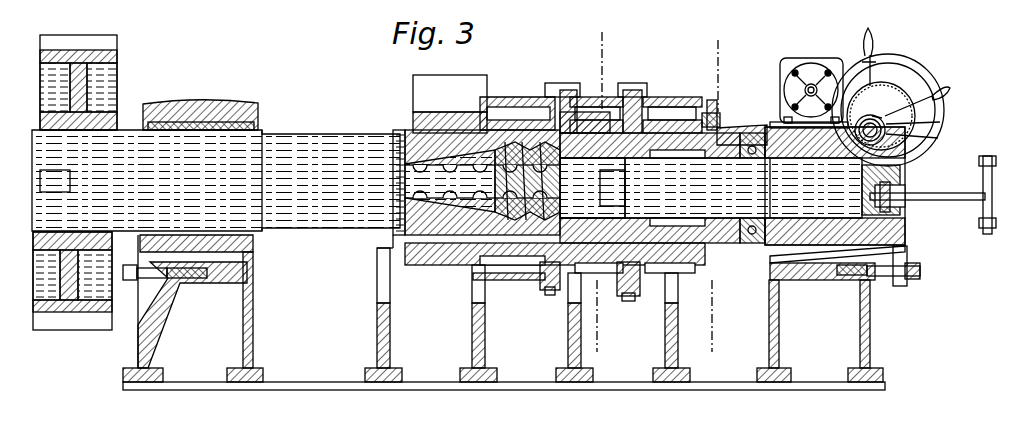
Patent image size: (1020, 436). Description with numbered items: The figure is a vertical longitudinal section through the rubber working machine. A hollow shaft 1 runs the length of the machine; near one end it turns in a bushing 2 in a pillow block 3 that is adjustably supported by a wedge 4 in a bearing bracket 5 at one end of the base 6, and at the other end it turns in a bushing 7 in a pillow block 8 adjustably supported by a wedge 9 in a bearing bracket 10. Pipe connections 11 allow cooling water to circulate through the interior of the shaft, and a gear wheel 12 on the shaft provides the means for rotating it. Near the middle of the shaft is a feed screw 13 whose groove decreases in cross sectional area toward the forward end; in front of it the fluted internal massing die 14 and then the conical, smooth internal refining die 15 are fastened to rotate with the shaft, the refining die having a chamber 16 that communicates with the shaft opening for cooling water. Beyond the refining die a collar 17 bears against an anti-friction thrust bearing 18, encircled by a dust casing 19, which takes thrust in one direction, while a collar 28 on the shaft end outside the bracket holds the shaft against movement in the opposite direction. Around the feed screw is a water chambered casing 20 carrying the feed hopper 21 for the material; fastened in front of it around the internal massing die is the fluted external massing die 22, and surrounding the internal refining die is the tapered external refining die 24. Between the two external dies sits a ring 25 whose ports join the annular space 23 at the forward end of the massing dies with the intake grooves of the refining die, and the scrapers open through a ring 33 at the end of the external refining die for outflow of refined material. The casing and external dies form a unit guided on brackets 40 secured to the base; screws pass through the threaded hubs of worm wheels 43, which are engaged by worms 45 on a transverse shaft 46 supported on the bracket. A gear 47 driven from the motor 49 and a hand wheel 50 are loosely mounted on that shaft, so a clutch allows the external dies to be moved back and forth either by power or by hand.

The shaft 1 is at (348, 131).
The bushing 2 is at (247, 116).
The pillow block 3 is at (254, 247).
The wedge 4 is at (255, 276).
The bearing bracket 5 is at (254, 335).
The base 6 is at (334, 372).
The bushing 7 is at (905, 246).
The pillow block 8 is at (920, 270).
The wedge 9 is at (880, 285).
The bearing bracket 10 is at (752, 68).
The pipe connections 11 is at (962, 205).
The gear wheel 12 is at (118, 62).
The feed screw 13 is at (510, 105).
The internal massing die 14 is at (575, 100).
The internal refining die 15 is at (688, 97).
The chamber 16 is at (700, 109).
The collar 17 is at (743, 130).
The anti-friction thrust bearing 18 is at (753, 254).
The dust casing 19 is at (739, 246).
The casing 20 is at (541, 215).
The feed hopper 21 is at (450, 104).
The external massing die 22 is at (590, 98).
The annular space 23 is at (615, 280).
The external refining die 24 is at (659, 99).
The ring 25 is at (636, 282).
The collar 28 is at (905, 140).
The ring 33 is at (719, 105).
The brackets 40 is at (470, 334).
The worm wheels 43 is at (920, 120).
The worms 45 is at (895, 80).
The shaft 46 is at (905, 102).
The gear 47 is at (886, 48).
The motor 49 is at (811, 62).
The hand wheel 50 is at (895, 48).